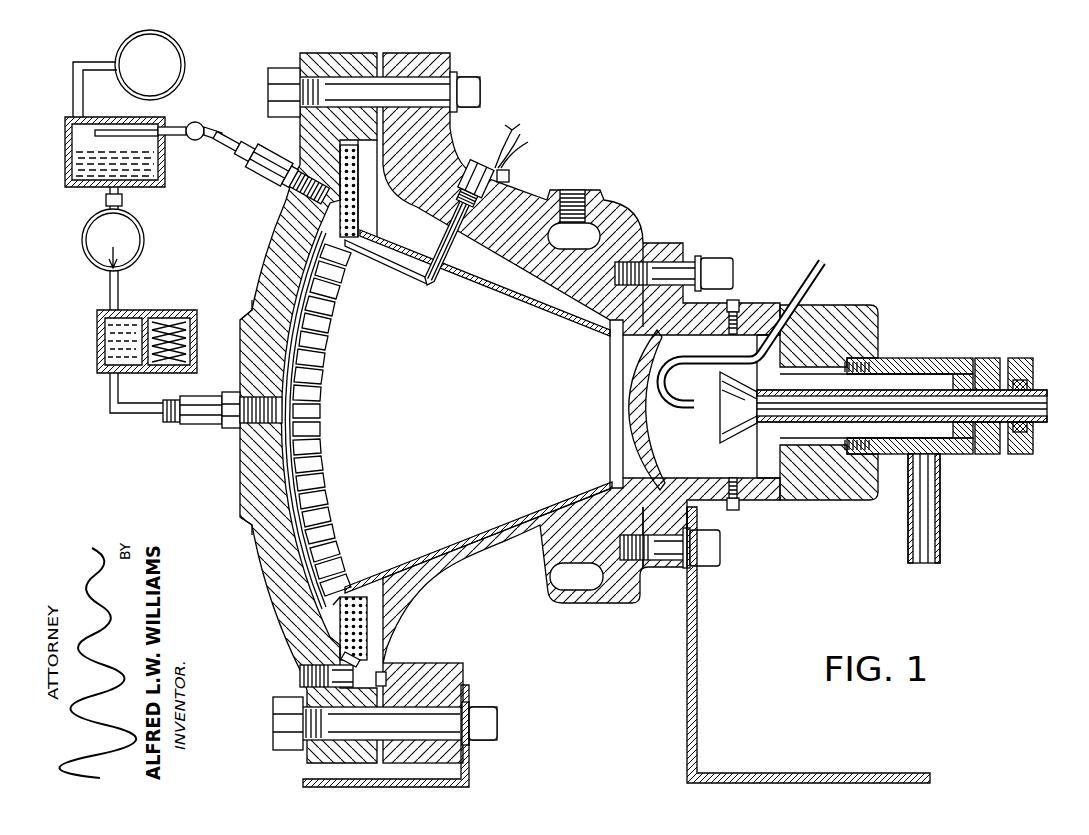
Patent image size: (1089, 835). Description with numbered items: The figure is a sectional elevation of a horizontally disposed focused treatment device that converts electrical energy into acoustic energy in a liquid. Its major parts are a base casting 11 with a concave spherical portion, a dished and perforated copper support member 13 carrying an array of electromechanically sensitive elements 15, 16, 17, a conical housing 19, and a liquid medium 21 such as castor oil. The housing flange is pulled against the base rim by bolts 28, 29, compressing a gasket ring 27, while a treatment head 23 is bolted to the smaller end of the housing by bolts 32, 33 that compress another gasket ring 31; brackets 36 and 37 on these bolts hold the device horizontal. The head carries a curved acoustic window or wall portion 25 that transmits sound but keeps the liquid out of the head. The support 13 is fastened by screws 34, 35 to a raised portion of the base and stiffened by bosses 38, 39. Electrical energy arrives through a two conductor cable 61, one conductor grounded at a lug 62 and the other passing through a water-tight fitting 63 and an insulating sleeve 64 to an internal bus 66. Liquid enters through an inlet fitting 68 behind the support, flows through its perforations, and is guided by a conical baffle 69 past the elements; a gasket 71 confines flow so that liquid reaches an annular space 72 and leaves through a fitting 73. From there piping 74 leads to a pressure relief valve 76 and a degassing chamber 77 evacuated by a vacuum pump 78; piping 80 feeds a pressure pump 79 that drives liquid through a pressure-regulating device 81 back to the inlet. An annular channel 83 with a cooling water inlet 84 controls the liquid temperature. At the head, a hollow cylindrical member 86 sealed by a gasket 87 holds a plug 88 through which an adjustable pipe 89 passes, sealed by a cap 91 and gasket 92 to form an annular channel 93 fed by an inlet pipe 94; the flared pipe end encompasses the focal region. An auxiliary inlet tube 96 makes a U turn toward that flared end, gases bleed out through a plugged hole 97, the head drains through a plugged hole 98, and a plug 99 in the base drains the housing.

The base casting 11 is at (270, 536).
The support member 13 is at (287, 437).
The electromechanically sensitive element 15 is at (344, 252).
The electromechanically sensitive element 16 is at (339, 272).
The electromechanically sensitive element 17 is at (330, 292).
The housing 19 is at (467, 612).
The liquid medium 21 is at (565, 628).
The treatment head 23 is at (845, 312).
The wall portion 25 is at (646, 441).
The gasket ring 27 is at (386, 680).
The bolt 28 is at (499, 724).
The bolt 29 is at (470, 74).
The gasket ring 31 is at (668, 571).
The bolt 32 is at (720, 554).
The bolt 33 is at (696, 266).
The screw 34 is at (343, 658).
The screw 35 is at (357, 160).
The bracket 36 is at (470, 777).
The bracket 37 is at (700, 731).
The boss 38 is at (250, 506).
The boss 39 is at (283, 343).
The two conductor cable 61 is at (521, 140).
The lug 62 is at (511, 180).
The water-tight fitting 63 is at (471, 170).
The insulating sleeve 64 is at (473, 172).
The internal bus 66 is at (385, 263).
The liquid inlet fitting 68 is at (206, 426).
The conical baffle 69 is at (470, 291).
The gasket 71 is at (330, 599).
The annular space 72 is at (334, 612).
The fitting 73 is at (292, 180).
The piping 74 is at (233, 152).
The pressure relief valve 76 is at (195, 141).
The chamber 77 is at (166, 180).
The vacuum pump 78 is at (185, 62).
The pressure pump 79 is at (144, 240).
The piping 80 is at (122, 202).
The pressure-regulating device 81 is at (156, 318).
The annular channel 83 is at (580, 236).
The cooling water inlet 84 is at (574, 199).
The hollow cylindrical member 86 is at (926, 358).
The gasket 87 is at (851, 365).
The plug 88 is at (986, 358).
The pipe 89 is at (780, 424).
The cap 91 is at (1021, 358).
The gasket 92 is at (1030, 381).
The annular channel 93 is at (946, 432).
The inlet pipe 94 is at (941, 518).
The auxiliary inlet tube 96 is at (807, 276).
The plugged hole 97 is at (735, 304).
The plugged hole 98 is at (735, 507).
The plug 99 is at (303, 676).